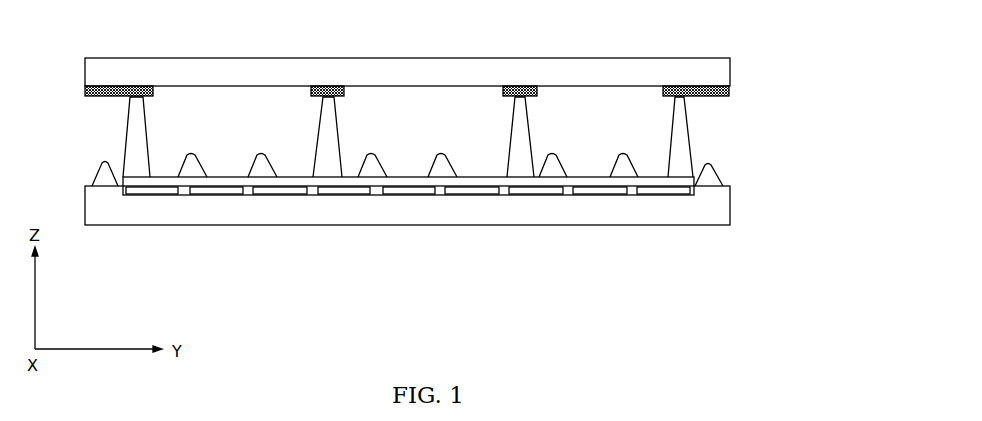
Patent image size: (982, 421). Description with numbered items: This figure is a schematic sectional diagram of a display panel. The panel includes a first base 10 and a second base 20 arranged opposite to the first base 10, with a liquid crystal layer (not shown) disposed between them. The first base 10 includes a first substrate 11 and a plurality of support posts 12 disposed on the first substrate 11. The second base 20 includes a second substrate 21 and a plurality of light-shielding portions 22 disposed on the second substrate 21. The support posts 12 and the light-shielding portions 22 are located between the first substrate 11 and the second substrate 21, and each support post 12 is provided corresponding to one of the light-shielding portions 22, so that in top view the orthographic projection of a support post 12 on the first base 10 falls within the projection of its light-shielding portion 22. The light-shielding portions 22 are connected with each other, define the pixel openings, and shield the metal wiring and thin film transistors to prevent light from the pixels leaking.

The first base 10 is at (466, 161).
The first substrate 11 is at (712, 213).
The support posts 12 is at (683, 147).
The second base 20 is at (466, 69).
The second substrate 21 is at (717, 73).
The light-shielding portions 22 is at (730, 88).